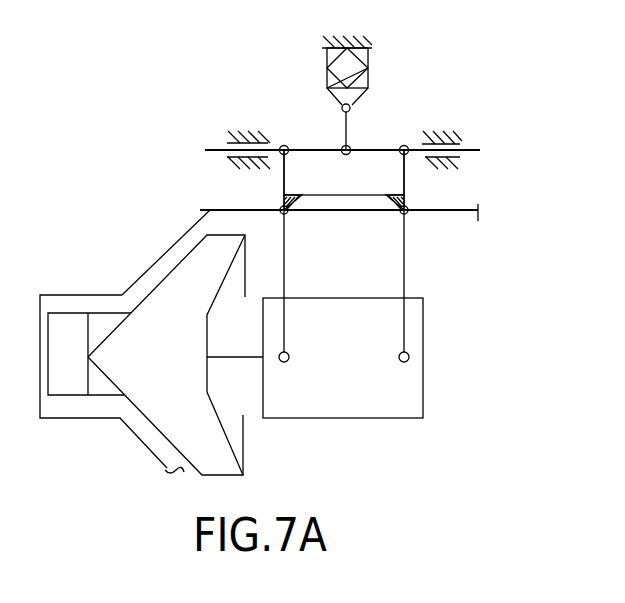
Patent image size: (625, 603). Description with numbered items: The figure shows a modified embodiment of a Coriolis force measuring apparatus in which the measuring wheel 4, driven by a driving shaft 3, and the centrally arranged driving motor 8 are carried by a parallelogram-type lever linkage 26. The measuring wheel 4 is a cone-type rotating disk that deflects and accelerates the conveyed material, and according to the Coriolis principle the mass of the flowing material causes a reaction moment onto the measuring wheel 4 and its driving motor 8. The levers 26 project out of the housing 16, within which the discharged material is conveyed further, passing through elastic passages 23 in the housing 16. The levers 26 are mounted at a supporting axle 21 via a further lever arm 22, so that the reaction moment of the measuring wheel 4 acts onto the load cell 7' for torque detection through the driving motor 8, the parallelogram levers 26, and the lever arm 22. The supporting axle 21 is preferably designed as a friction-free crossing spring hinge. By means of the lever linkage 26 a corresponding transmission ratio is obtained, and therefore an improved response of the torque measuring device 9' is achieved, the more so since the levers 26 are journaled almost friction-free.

The driving shaft 3 is at (243, 355).
The measuring wheel 4 is at (147, 290).
The driving motor 8 is at (423, 315).
The housing 16 is at (168, 248).
The supporting axle 21 is at (262, 152).
The lever arm 22 is at (342, 150).
The elastic passages 23 is at (283, 208).
The parallelogram-type lever linkage 26 is at (404, 250).
The load cell 7' is at (372, 93).
The torque measuring device 9' is at (342, 126).